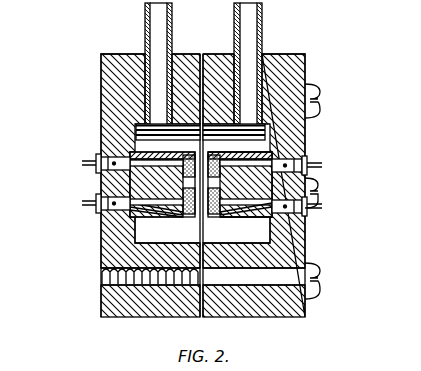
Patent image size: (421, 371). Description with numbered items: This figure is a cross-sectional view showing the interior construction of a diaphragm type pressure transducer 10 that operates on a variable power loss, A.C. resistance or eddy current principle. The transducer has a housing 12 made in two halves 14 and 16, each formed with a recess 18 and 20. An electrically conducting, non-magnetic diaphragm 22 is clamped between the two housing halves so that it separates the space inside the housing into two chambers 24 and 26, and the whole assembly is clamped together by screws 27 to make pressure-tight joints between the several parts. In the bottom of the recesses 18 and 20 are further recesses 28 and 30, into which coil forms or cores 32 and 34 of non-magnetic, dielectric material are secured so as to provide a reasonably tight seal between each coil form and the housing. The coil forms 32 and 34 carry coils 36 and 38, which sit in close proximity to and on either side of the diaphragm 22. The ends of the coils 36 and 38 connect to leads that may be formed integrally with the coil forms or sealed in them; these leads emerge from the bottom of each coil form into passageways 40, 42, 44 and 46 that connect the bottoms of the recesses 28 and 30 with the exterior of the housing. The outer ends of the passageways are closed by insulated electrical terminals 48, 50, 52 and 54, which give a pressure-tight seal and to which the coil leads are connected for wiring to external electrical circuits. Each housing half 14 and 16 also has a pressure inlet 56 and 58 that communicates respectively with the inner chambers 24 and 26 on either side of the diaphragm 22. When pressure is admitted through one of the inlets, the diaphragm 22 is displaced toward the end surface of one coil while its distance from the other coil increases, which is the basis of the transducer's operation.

The pressure transducer 10 is at (317, 64).
The housing 12 is at (305, 80).
The housing half 14 is at (101, 78).
The housing half 16 is at (284, 62).
The recess 18 is at (136, 130).
The recess 20 is at (270, 138).
The diaphragm 22 is at (203, 238).
The chamber 24 is at (135, 243).
The chamber 26 is at (275, 251).
The screws 27 is at (320, 100).
The recess 28 is at (130, 214).
The recess 30 is at (272, 160).
The coil form 32 is at (130, 186).
The coil form 34 is at (275, 216).
The coil 36 is at (193, 222).
The coil 38 is at (210, 152).
The passageway 40 is at (130, 162).
The passageway 42 is at (130, 202).
The passageway 44 is at (320, 185).
The passageway 46 is at (320, 200).
The insulated electrical terminal 48 is at (82, 163).
The insulated electrical terminal 50 is at (82, 203).
The insulated electrical terminal 52 is at (322, 165).
The insulated electrical terminal 54 is at (322, 207).
The pressure inlet 56 is at (145, 20).
The pressure inlet 58 is at (250, 20).